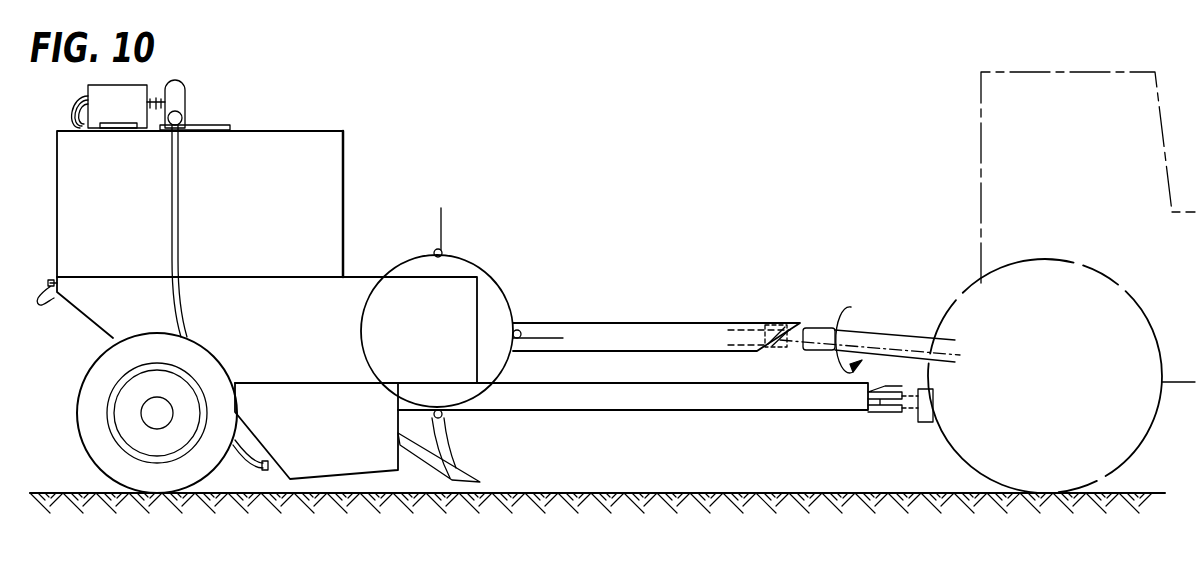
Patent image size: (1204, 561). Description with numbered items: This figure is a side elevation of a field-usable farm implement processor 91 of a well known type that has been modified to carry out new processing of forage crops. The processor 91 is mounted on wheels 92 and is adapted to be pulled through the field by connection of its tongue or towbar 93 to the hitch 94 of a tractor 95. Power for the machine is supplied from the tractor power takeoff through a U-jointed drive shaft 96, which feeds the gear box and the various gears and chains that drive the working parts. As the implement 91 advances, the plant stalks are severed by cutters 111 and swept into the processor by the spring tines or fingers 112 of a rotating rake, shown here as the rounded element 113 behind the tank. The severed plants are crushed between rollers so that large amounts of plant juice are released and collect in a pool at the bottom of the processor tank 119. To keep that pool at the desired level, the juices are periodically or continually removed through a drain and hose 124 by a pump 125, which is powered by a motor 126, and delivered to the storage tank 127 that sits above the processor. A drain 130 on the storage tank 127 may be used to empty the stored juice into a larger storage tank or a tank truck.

The farm implement processor 91 is at (432, 163).
The wheels 92 is at (77, 420).
The tongue or towbar 93 is at (688, 402).
The hitch 94 is at (878, 410).
The tractor 95 is at (1080, 131).
The U-jointed drive shaft 96 is at (748, 330).
The cutters 111 is at (470, 468).
The spring tines or fingers 112 is at (441, 220).
The drum 113 is at (493, 288).
The processor tank 119 is at (352, 426).
The hose 124 is at (178, 205).
The pump 125 is at (180, 88).
The motor 126 is at (130, 88).
The storage tank 127 is at (345, 152).
The drain 130 is at (48, 305).